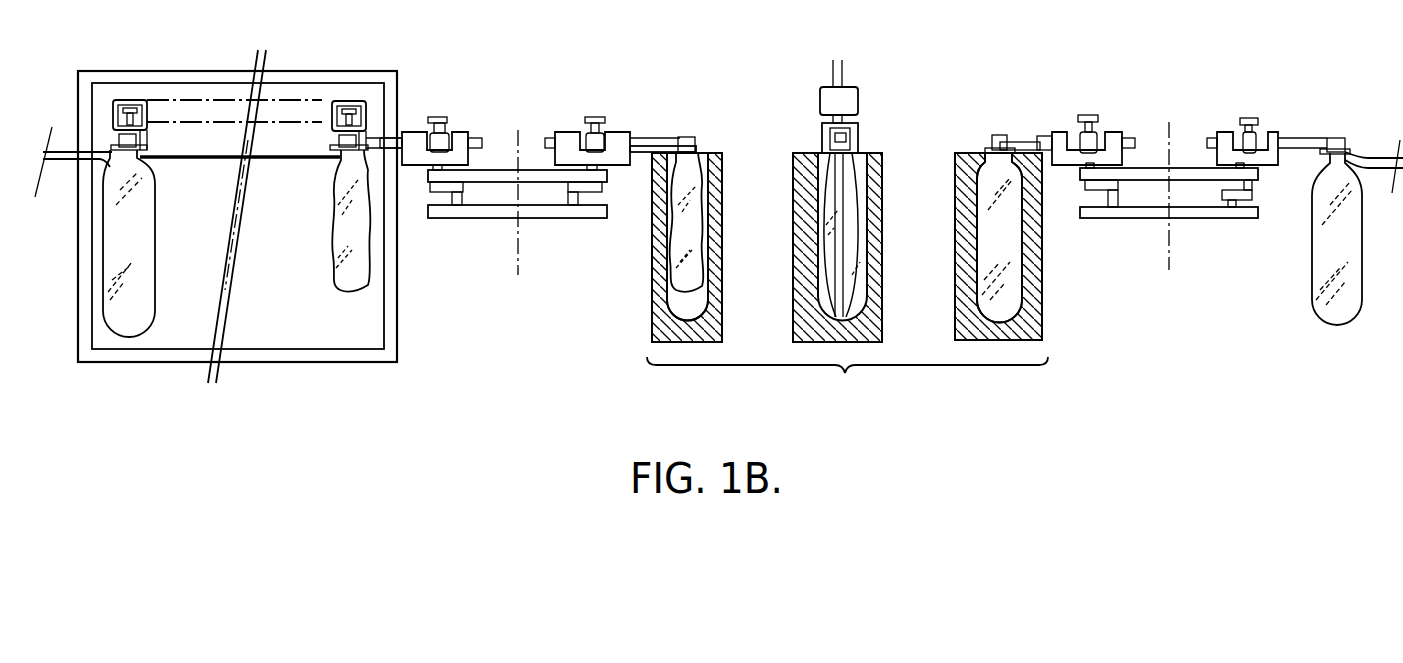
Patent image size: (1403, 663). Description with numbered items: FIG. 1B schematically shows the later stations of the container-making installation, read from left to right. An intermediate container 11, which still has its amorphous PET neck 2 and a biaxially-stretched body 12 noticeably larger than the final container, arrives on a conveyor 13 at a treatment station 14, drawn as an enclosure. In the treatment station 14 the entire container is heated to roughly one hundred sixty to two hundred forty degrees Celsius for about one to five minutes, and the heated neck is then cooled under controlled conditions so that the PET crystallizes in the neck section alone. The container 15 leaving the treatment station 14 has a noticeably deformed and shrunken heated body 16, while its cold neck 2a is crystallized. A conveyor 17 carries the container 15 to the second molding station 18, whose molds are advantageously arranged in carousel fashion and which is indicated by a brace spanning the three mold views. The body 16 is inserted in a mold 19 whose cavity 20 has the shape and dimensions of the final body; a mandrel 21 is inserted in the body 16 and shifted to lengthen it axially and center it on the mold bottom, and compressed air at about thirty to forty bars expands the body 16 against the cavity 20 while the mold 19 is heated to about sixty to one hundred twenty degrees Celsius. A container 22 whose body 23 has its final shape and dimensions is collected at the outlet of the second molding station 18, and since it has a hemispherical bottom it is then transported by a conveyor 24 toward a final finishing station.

The neck 2 is at (118, 140).
The cold neck 2a is at (367, 130).
The intermediate container 11 is at (147, 256).
The biaxially-stretched body 12 is at (156, 200).
The conveyor 13 is at (62, 166).
The treatment station 14 is at (290, 364).
The container 15 is at (352, 252).
The heated body 16 is at (343, 208).
The conveyor 17 is at (540, 250).
The second molding station 18 is at (847, 381).
The mold 19 is at (665, 325).
The cavity 20 is at (703, 302).
The mandrel 21 is at (840, 190).
The container 22 is at (1005, 290).
The body 23 is at (1015, 233).
The conveyor 24 is at (1201, 235).